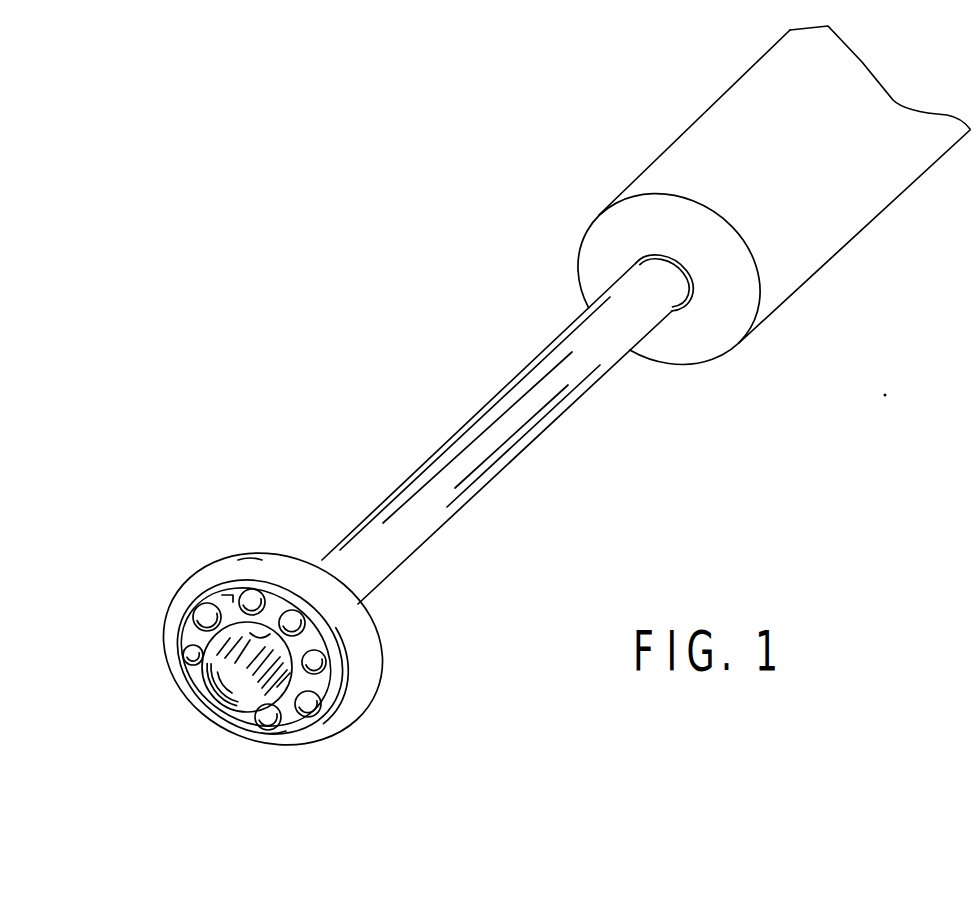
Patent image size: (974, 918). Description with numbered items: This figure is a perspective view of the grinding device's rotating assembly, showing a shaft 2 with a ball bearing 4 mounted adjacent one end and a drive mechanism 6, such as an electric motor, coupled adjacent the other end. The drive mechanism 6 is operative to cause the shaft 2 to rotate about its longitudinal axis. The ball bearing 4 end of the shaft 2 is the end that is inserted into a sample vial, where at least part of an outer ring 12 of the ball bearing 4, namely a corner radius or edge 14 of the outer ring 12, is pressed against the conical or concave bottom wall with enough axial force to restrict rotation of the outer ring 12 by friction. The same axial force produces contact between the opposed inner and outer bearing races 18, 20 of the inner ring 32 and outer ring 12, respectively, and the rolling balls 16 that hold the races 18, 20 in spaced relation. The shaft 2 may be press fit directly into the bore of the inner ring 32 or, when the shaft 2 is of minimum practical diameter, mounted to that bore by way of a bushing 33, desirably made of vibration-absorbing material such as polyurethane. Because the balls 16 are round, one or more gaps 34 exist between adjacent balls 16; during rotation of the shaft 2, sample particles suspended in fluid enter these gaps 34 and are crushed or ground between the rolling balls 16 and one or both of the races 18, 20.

The shaft 2 is at (512, 423).
The ball bearing 4 is at (396, 680).
The drive mechanism 6 is at (790, 192).
The outer ring 12 is at (248, 572).
The corner radius 14 is at (275, 745).
The balls 16 is at (186, 641).
The inner bearing race 18 is at (300, 639).
The outer bearing race 20 is at (292, 622).
The inner ring 32 is at (260, 637).
The bushing 33 is at (230, 690).
The gaps 34 is at (222, 595).